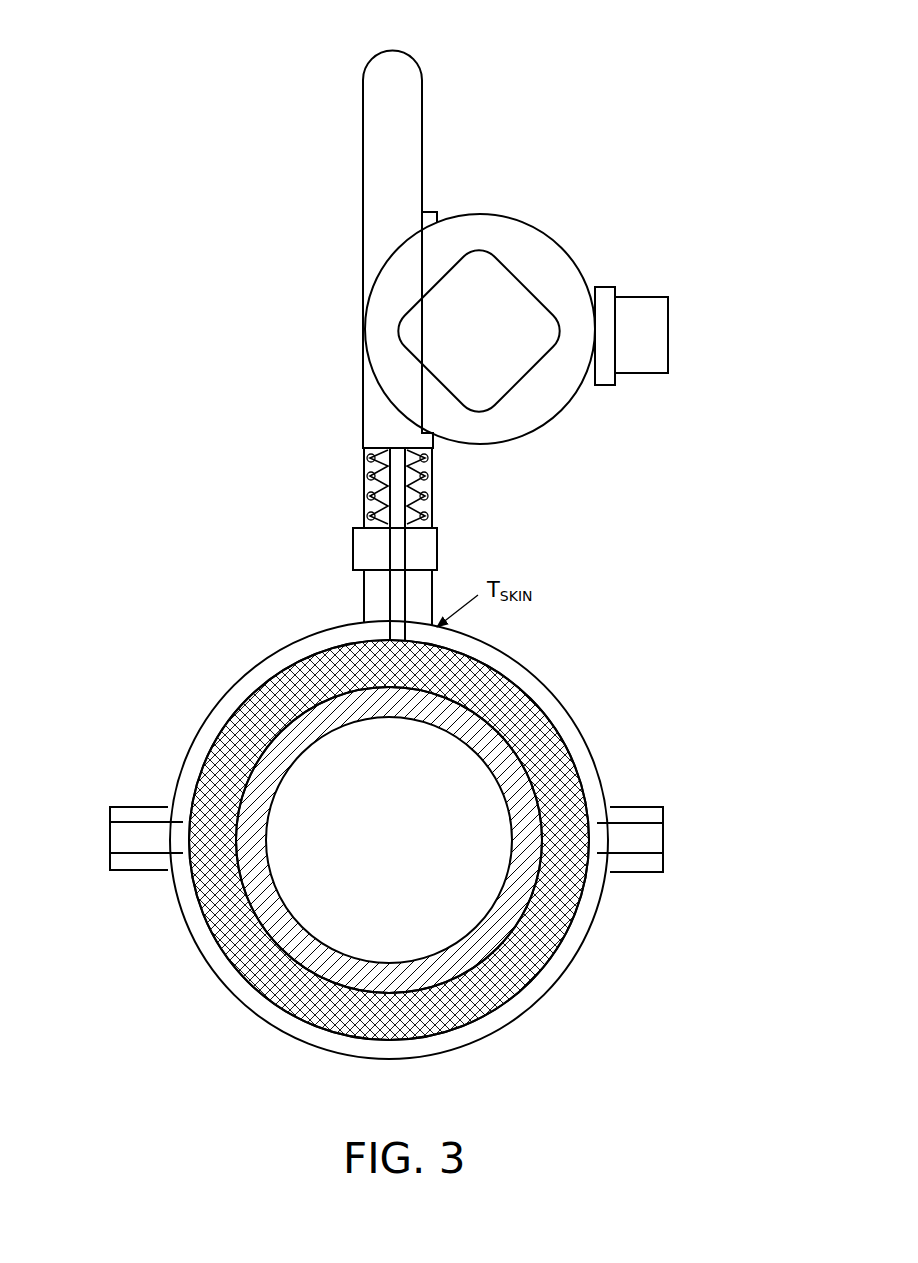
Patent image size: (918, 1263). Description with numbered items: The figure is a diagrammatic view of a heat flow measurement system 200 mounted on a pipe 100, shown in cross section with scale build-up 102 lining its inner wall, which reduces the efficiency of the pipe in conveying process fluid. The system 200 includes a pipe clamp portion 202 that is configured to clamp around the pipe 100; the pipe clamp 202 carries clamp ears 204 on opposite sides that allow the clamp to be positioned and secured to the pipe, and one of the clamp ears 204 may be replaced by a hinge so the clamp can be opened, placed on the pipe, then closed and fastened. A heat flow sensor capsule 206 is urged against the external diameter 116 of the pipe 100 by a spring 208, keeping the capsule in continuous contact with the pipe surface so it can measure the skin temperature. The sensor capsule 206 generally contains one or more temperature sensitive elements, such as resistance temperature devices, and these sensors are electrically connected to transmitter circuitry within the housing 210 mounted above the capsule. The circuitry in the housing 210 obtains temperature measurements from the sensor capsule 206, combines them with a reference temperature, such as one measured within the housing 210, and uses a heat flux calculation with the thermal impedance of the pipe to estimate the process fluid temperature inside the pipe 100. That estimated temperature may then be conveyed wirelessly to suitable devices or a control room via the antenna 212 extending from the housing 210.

The pipe 100 is at (537, 962).
The scale build-up 102 is at (540, 770).
The external diameter 116 is at (490, 658).
The heat flow measurement system 200 is at (550, 345).
The pipe clamp portion 202 is at (530, 663).
The clamp ears 204 is at (128, 870).
The heat flow sensor capsule 206 is at (397, 612).
The spring 208 is at (432, 478).
The housing 210 is at (570, 262).
The antenna 212 is at (422, 115).